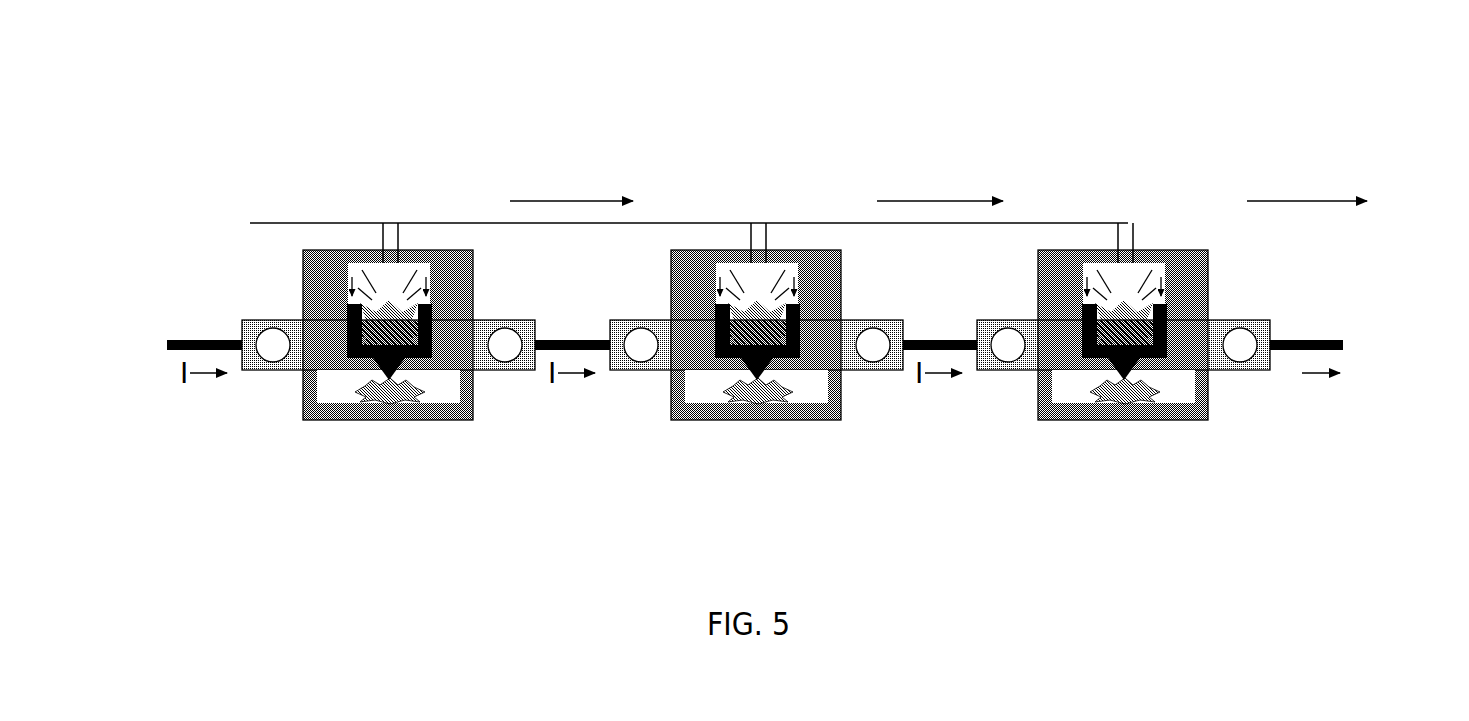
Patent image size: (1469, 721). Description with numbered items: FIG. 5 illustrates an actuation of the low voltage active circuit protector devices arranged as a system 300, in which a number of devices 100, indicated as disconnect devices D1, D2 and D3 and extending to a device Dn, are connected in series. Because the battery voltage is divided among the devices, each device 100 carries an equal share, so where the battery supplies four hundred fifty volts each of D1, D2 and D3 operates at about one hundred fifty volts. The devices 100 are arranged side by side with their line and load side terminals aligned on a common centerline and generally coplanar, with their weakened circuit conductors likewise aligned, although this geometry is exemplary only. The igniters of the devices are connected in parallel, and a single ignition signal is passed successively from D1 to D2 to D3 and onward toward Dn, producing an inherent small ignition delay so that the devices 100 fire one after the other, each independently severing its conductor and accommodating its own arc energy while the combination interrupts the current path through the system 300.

The low voltage active circuit protector device 100 is at (305, 408).
The system 300 is at (790, 113).
The first disconnect device D1 is at (389, 250).
The second disconnect device D2 is at (756, 250).
The third disconnect device D3 is at (1125, 250).
The nth disconnect device Dn is at (1335, 204).